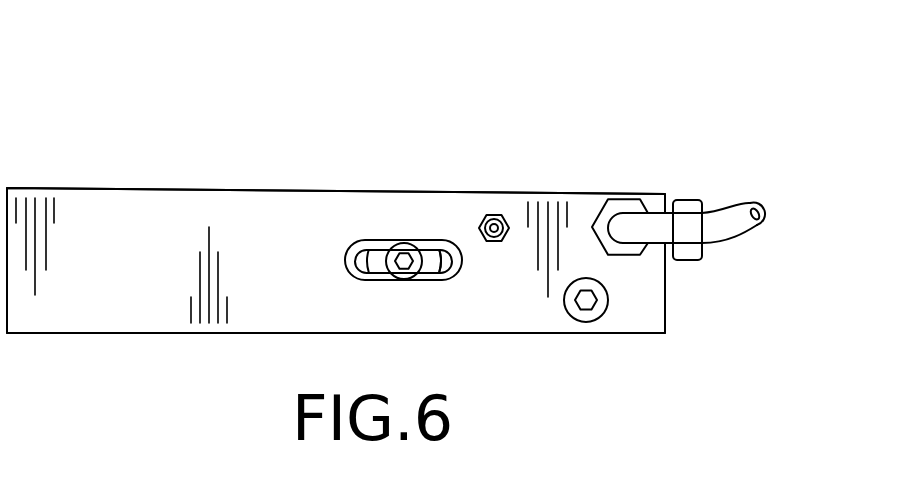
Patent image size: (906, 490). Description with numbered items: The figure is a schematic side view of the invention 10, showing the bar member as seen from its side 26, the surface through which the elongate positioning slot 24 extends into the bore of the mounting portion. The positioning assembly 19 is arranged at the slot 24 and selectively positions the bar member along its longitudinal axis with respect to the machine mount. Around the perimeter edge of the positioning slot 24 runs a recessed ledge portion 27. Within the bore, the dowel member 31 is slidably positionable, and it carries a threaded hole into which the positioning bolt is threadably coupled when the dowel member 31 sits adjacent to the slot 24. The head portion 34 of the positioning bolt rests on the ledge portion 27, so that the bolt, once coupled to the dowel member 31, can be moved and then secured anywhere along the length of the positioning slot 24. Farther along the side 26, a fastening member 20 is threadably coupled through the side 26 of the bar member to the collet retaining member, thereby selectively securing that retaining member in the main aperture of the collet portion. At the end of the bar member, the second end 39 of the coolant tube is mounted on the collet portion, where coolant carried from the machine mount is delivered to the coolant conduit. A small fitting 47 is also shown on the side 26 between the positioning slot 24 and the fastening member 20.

The tool assembly 10 is at (101, 88).
The positioning assembly 19 is at (362, 300).
The fastening member 20 is at (573, 312).
The positioning slot 24 is at (340, 249).
The side 26 is at (103, 270).
The recessed ledge portion 27 is at (372, 242).
The dowel member 31 is at (443, 243).
The head portion 34 is at (413, 244).
The second end 39 is at (657, 233).
The set screw 47 is at (510, 224).